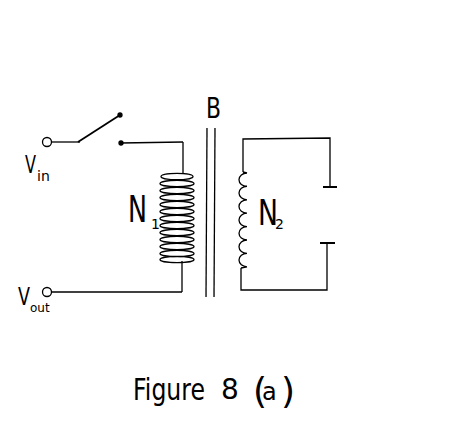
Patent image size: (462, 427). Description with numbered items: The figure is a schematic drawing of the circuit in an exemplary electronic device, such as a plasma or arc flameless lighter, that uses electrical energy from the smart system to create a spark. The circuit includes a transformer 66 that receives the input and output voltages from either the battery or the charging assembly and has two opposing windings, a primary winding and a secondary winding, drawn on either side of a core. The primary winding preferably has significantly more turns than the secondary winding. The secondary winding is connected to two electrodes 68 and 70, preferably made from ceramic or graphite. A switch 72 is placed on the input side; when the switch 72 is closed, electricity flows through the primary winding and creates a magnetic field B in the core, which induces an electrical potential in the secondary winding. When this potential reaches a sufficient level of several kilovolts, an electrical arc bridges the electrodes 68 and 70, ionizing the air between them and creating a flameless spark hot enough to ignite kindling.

The transformer 66 is at (243, 101).
The electrode 68 is at (309, 169).
The electrode 70 is at (308, 261).
The switch 72 is at (83, 116).